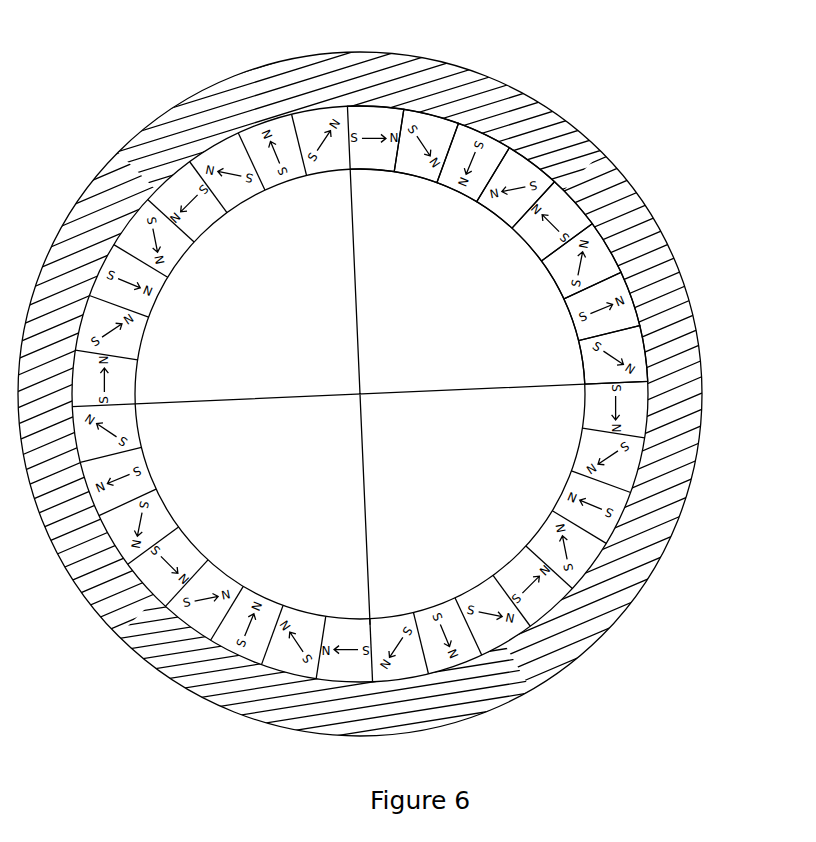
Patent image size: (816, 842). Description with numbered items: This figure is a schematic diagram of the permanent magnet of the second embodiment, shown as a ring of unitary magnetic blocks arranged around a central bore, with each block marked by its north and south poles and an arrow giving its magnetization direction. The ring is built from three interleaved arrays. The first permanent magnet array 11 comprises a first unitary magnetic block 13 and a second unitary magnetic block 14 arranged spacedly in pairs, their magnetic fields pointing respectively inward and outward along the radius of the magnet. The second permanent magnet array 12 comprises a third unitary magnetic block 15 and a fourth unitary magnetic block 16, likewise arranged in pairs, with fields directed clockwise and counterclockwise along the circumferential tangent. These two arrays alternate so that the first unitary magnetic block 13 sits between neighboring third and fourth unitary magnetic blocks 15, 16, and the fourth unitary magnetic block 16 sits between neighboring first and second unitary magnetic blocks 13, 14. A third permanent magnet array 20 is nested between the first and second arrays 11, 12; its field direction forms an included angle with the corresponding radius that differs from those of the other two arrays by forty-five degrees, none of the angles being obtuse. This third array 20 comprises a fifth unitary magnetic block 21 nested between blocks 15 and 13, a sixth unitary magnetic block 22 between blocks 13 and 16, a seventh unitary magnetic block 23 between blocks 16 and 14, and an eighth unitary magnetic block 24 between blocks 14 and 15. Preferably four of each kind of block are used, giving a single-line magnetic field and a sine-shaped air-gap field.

The first permanent magnet array 11 is at (152, 296).
The second permanent magnet array 12 is at (367, 170).
The third permanent magnet array 20 is at (385, 622).
The third unitary magnetic block 15 is at (372, 112).
The fifth unitary magnetic block 21 is at (431, 123).
The first unitary magnetic block 13 is at (490, 145).
The sixth unitary magnetic block 22 is at (518, 167).
The fourth unitary magnetic block 16 is at (563, 207).
The seventh unitary magnetic block 23 is at (600, 257).
The second unitary magnetic block 14 is at (615, 285).
The eighth unitary magnetic block 24 is at (630, 350).